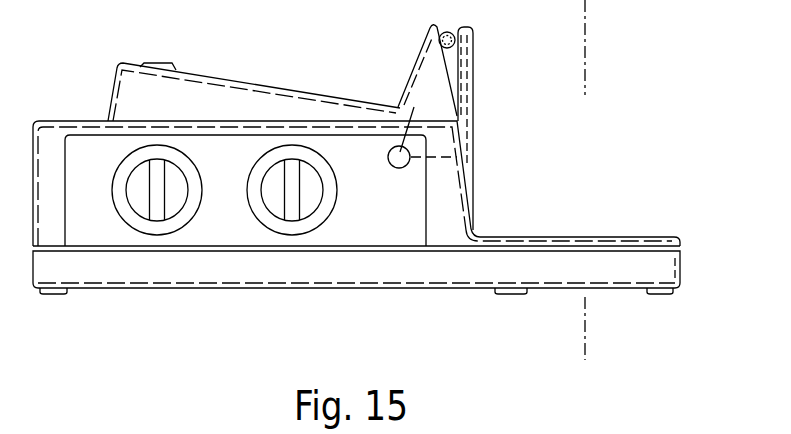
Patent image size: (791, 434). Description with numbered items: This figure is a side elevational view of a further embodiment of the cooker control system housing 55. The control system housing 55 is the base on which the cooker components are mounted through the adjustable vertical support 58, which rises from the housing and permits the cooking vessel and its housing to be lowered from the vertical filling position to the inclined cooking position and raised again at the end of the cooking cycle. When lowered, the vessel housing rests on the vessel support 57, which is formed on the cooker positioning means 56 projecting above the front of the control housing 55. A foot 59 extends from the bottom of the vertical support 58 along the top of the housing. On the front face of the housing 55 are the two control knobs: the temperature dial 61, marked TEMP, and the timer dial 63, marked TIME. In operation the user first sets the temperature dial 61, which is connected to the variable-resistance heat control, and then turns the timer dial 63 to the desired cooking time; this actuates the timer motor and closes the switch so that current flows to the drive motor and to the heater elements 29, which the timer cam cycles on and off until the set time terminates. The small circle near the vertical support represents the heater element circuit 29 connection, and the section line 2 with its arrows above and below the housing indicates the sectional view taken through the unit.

The section line 2- 2 is at (552, 338).
The heater elements 29 is at (403, 167).
The control system housing 55 is at (168, 272).
The cooker positioning means 56 is at (112, 80).
The vessel support 57 is at (157, 62).
The adjustable vertical support 58 is at (462, 88).
The bracket foot plate 59 is at (612, 243).
The temperature dial 61 is at (133, 220).
The timer dial 63 is at (294, 226).